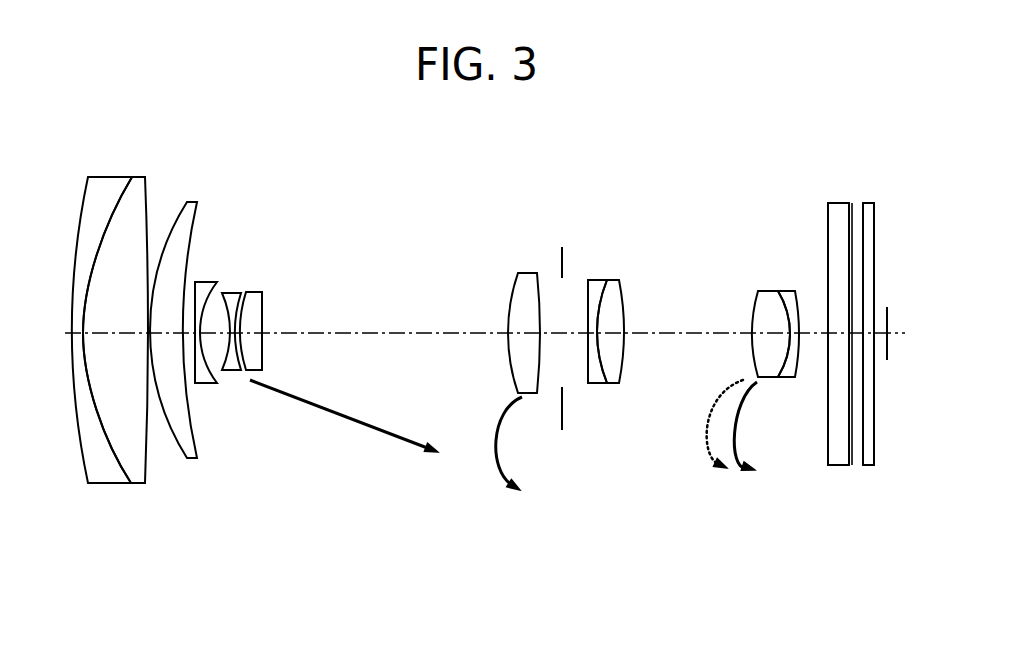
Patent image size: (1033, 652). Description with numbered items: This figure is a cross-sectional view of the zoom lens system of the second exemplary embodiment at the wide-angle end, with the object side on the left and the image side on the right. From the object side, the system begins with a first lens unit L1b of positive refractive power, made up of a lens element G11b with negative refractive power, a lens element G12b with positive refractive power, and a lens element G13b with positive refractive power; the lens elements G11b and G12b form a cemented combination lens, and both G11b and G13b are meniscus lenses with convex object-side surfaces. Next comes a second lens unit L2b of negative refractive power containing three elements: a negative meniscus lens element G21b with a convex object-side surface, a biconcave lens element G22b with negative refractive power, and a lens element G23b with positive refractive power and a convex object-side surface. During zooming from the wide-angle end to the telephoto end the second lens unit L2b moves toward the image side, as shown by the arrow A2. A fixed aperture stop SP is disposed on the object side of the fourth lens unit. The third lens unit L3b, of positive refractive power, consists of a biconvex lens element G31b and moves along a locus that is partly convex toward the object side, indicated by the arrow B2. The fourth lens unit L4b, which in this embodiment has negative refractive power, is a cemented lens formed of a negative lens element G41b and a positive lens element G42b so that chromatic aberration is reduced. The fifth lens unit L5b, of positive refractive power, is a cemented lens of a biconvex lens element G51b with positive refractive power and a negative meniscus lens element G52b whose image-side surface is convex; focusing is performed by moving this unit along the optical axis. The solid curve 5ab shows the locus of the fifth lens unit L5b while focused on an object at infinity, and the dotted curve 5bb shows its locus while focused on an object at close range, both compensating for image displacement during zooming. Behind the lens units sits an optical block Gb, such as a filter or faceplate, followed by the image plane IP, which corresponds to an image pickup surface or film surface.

The first lens unit L1b is at (200, 200).
The lens element with negative refractive power G11b is at (90, 485).
The lens element with positive refractive power G12b is at (137, 485).
The lens element with positive refractive power G13b is at (192, 462).
The second lens unit L2b is at (267, 283).
The lens element with negative refractive power G21b is at (207, 383).
The lens element with negative refractive power G22b is at (230, 370).
The lens element with positive refractive power G23b is at (260, 370).
The arrow indicating movement of second lens unit A2 is at (344, 429).
The aperture stop SP is at (564, 247).
The third lens unit L3b is at (545, 273).
The biconvex lens element G31b is at (530, 393).
The arrow indicating movement of third lens unit B2 is at (492, 443).
The fourth lens unit L4b is at (620, 277).
The negative lens element G41b is at (595, 383).
The positive lens element G42b is at (618, 298).
The fifth lens unit L5b is at (804, 293).
The lens element with positive refractive power G51b is at (752, 327).
The lens element with negative refractive power G52b is at (802, 323).
The solid curve 5ab is at (742, 455).
The dotted curve 5bb is at (713, 445).
The optical block Gb is at (877, 215).
The image plane IP is at (888, 323).